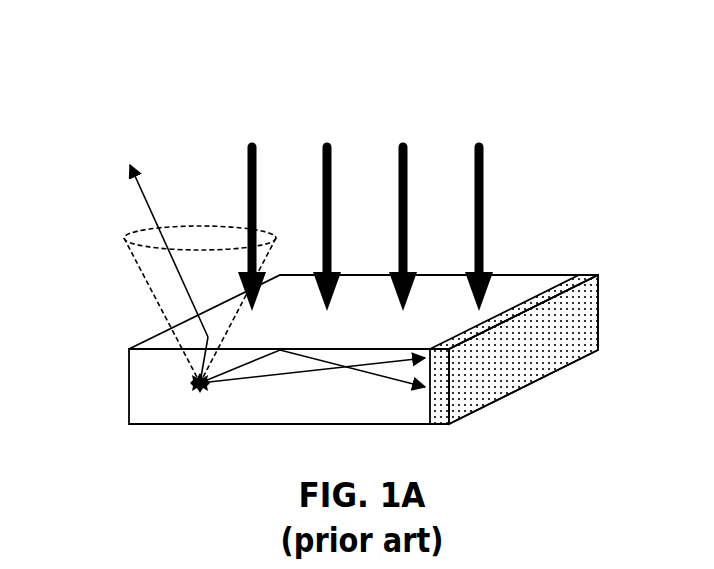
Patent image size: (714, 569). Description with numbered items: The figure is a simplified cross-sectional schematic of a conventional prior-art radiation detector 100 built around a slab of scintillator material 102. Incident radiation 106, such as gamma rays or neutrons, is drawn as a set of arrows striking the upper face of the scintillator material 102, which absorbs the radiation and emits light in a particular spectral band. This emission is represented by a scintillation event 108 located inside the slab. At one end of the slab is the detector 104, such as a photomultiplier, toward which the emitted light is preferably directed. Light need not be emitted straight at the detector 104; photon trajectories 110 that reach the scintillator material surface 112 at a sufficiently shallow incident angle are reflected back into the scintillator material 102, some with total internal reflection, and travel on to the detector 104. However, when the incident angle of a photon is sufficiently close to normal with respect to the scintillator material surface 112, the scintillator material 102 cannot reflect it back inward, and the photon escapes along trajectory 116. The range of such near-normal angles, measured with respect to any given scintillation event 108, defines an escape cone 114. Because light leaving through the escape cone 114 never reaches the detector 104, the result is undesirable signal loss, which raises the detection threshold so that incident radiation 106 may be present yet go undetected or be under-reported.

The radiation detector 100 is at (185, 88).
The scintillator material 102 is at (382, 317).
The detector 104 is at (543, 362).
The incident radiation 106 is at (483, 125).
The scintillation event 108 is at (193, 400).
The photon trajectories 110 is at (347, 367).
The scintillator material surface 112 is at (213, 337).
The escape cone 114 is at (117, 315).
The trajectory 116 is at (152, 212).